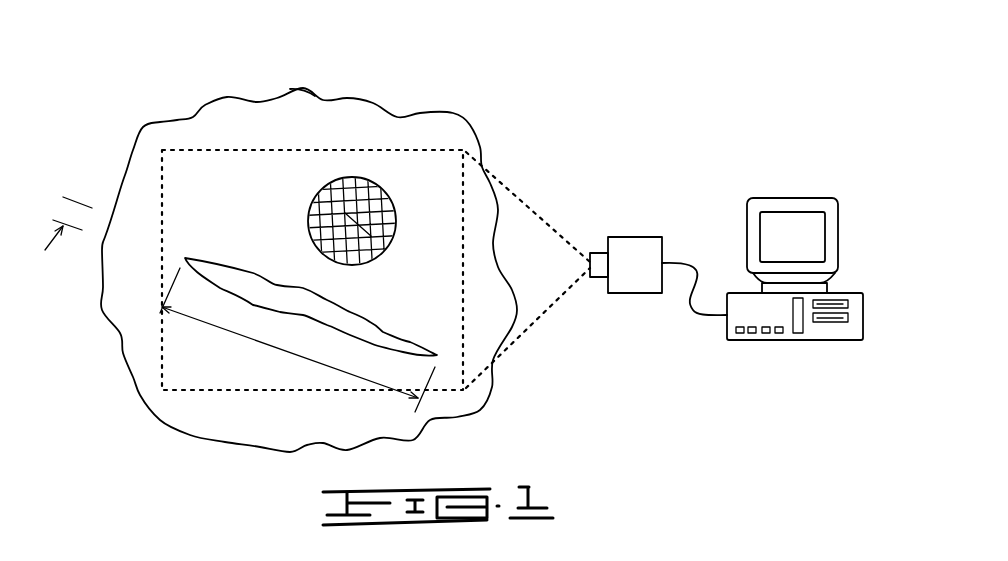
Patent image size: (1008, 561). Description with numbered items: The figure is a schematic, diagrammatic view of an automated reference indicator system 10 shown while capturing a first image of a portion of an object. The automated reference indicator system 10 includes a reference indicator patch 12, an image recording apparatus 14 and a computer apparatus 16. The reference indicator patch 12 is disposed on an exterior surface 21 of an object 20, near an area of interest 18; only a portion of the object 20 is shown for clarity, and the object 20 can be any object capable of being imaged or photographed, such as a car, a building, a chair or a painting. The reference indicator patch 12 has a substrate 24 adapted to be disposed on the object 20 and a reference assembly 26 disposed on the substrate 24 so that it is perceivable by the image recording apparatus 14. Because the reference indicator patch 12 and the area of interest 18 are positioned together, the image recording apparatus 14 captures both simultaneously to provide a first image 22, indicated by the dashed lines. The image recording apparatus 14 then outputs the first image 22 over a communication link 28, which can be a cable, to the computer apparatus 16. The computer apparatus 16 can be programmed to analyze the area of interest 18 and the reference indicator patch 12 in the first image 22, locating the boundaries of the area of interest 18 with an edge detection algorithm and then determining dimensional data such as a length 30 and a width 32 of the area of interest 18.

The automated reference indicator system 10 is at (396, 71).
The reference indicator patch 12 is at (318, 192).
The image recording apparatus 14 is at (642, 233).
The computer apparatus 16 is at (787, 196).
The area of interest 18 is at (355, 325).
The object 20 is at (400, 120).
The exterior surface 21 is at (298, 110).
The first image 22 is at (203, 152).
The substrate 24 is at (374, 185).
The reference assembly 26 is at (362, 234).
The communication link 28 is at (695, 312).
The length 30 is at (293, 351).
The width 32 is at (80, 193).